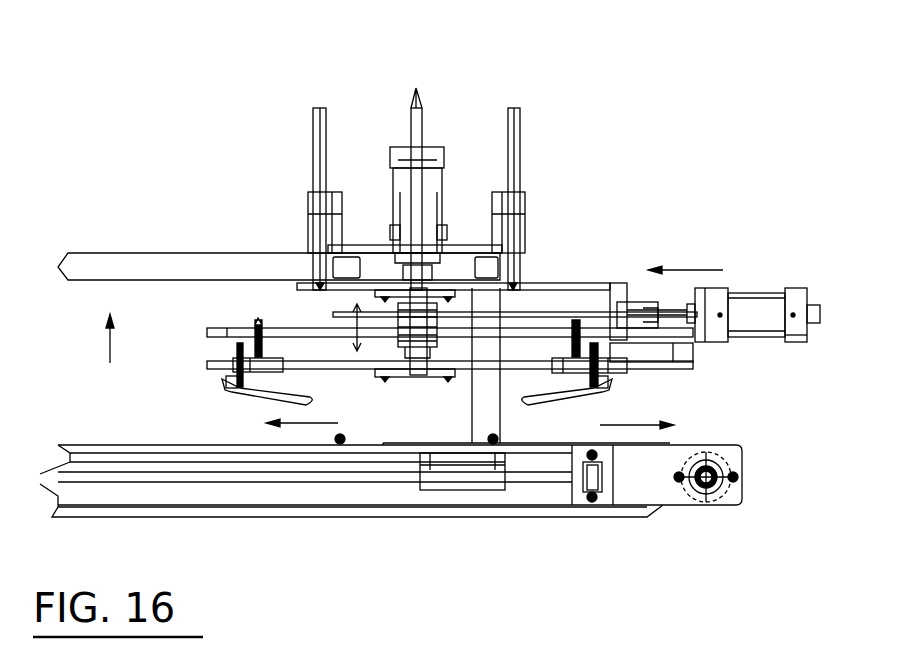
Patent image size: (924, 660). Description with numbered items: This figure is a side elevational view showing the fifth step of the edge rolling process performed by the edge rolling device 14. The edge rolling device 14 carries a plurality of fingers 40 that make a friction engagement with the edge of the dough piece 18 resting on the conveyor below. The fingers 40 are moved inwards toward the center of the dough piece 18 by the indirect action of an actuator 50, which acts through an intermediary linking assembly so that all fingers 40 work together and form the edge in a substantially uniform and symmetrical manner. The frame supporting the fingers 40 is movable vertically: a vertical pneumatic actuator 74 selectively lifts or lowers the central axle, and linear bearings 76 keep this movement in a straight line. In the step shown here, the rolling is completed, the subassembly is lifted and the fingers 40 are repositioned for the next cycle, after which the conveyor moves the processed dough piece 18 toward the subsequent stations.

The edge rolling device 14 is at (184, 146).
The dough piece 18 is at (382, 448).
The fingers 40 is at (277, 403).
The actuator 50 is at (763, 298).
The vertical pneumatic actuator 74 is at (397, 147).
The linear bearings 76 is at (308, 193).